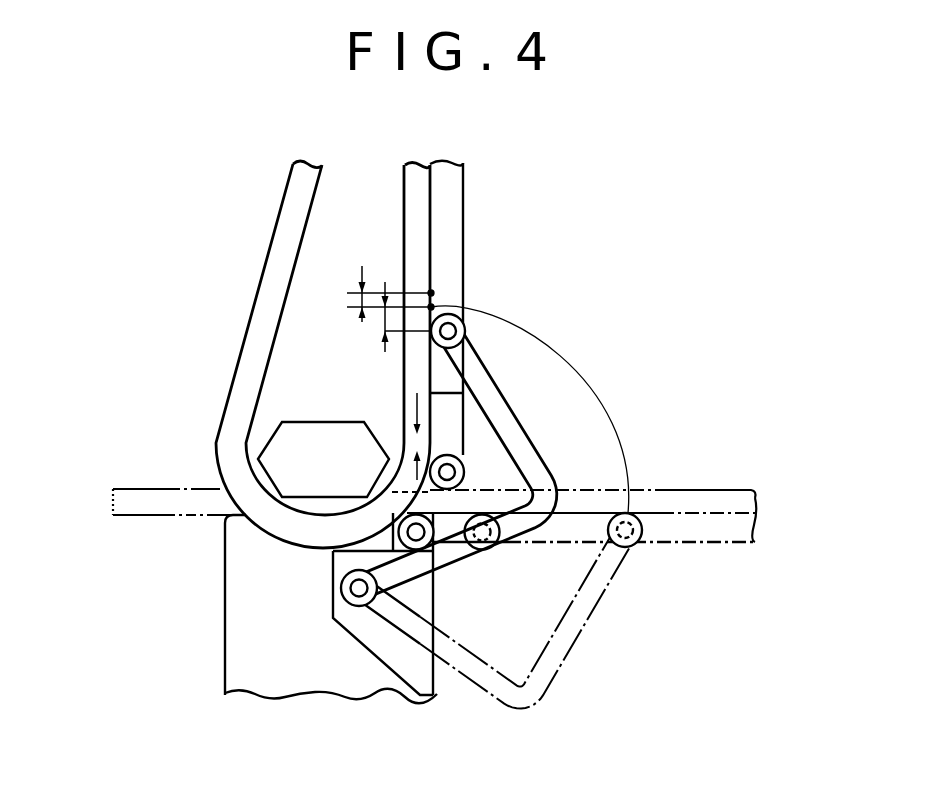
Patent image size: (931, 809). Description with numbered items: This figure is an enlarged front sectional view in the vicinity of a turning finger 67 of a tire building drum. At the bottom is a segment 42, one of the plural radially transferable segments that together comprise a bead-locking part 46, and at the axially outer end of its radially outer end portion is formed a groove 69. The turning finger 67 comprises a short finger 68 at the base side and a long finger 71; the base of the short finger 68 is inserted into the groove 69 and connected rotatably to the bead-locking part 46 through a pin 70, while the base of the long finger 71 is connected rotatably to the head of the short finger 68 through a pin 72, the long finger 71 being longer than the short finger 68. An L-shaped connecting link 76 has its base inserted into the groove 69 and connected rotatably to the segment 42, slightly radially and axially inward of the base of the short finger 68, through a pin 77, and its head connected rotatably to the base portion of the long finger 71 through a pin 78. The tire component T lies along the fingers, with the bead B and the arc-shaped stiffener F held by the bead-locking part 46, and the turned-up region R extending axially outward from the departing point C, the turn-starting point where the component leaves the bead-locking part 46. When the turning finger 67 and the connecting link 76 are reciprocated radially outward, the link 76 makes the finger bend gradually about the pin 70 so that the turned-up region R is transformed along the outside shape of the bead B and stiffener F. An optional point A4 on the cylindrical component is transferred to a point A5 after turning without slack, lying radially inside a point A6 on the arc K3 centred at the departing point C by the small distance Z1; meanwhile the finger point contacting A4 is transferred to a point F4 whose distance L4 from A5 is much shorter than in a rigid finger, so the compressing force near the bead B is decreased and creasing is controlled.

The segment 42 is at (245, 623).
The bead-locking part 46 is at (220, 568).
The turning finger 67 is at (467, 170).
The short finger 68 is at (468, 549).
The groove 69 is at (393, 660).
The pin 70 is at (436, 508).
The long finger 71 is at (450, 212).
The pin 72 is at (455, 471).
The connecting link 76 is at (507, 427).
The pin 77 is at (350, 588).
The pin 78 is at (455, 331).
The optional point on the tire component A4 is at (628, 513).
The transferred point A5 is at (431, 307).
The point on arc K3 A6 is at (431, 293).
The bead B is at (312, 438).
The departing point C is at (400, 523).
The transferred point on the turning finger F4 is at (428, 335).
The arc K3 is at (597, 398).
The distance L4 is at (382, 318).
The turned-up region R is at (420, 182).
The tire component T is at (283, 253).
The distance Z1 is at (379, 294).